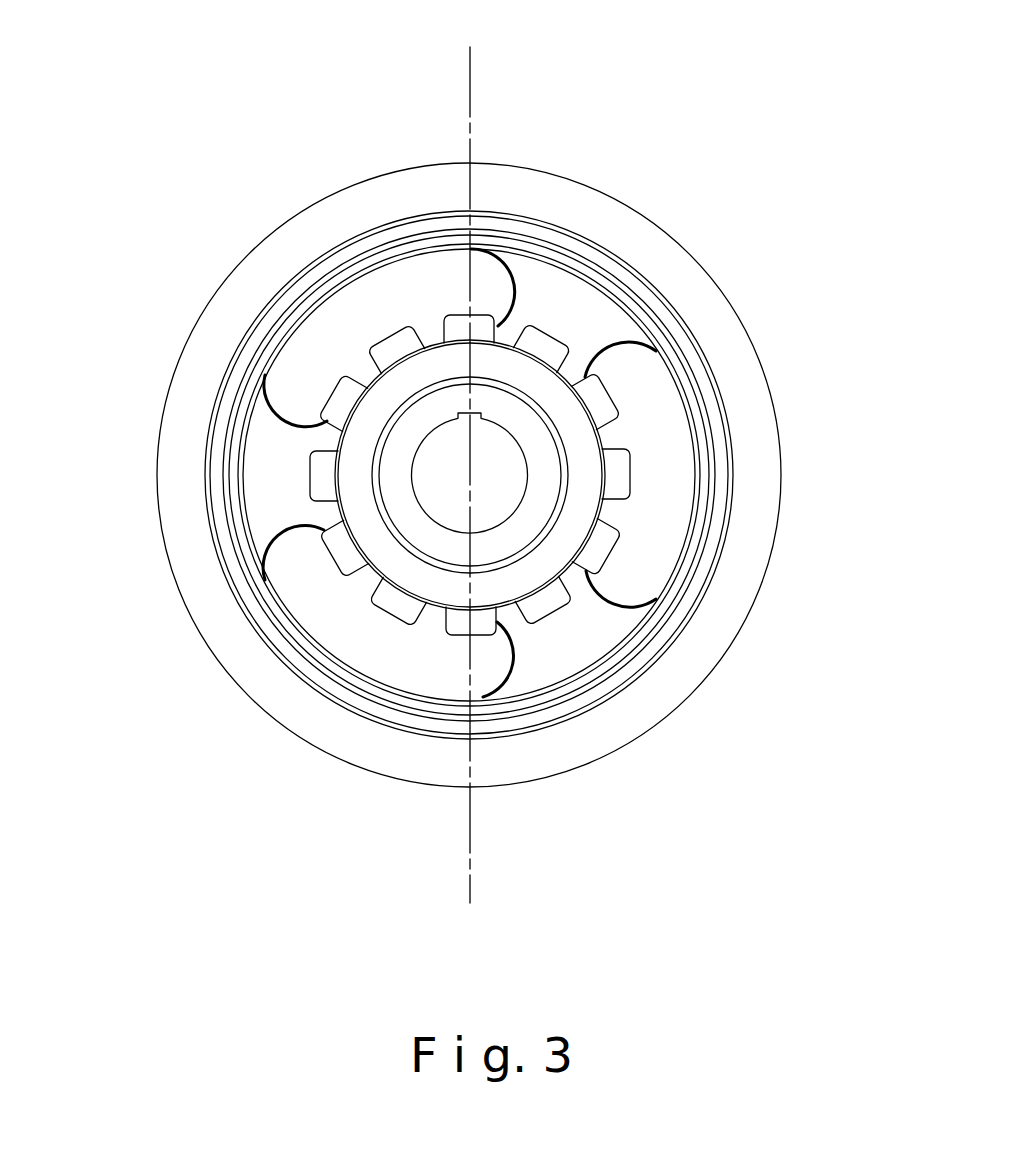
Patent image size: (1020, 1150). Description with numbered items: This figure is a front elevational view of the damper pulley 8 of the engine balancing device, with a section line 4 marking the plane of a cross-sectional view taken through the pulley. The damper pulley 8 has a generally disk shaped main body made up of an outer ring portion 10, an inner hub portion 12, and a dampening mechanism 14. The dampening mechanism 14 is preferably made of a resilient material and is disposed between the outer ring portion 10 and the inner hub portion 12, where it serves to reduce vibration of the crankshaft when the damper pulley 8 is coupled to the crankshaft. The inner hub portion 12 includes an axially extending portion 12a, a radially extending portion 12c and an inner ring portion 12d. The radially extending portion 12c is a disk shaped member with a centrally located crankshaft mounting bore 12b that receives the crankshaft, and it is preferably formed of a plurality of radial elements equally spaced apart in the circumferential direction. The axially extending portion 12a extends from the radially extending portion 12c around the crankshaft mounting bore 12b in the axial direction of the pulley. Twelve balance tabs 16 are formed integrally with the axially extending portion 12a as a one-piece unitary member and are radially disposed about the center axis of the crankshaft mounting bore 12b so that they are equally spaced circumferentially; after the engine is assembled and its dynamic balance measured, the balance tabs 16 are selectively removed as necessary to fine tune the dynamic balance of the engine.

The section line 4- 4 is at (413, 47).
The damper pulley 8 is at (244, 191).
The outer ring portion 10 is at (743, 387).
The inner hub portion 12 is at (515, 580).
The axially extending portion 12a is at (362, 438).
The crankshaft mounting bore 12b is at (340, 535).
The radially extending portion 12c is at (278, 487).
The inner ring portion 12d is at (702, 527).
The dampening mechanism 14 is at (723, 480).
The balance tabs 16 is at (543, 345).